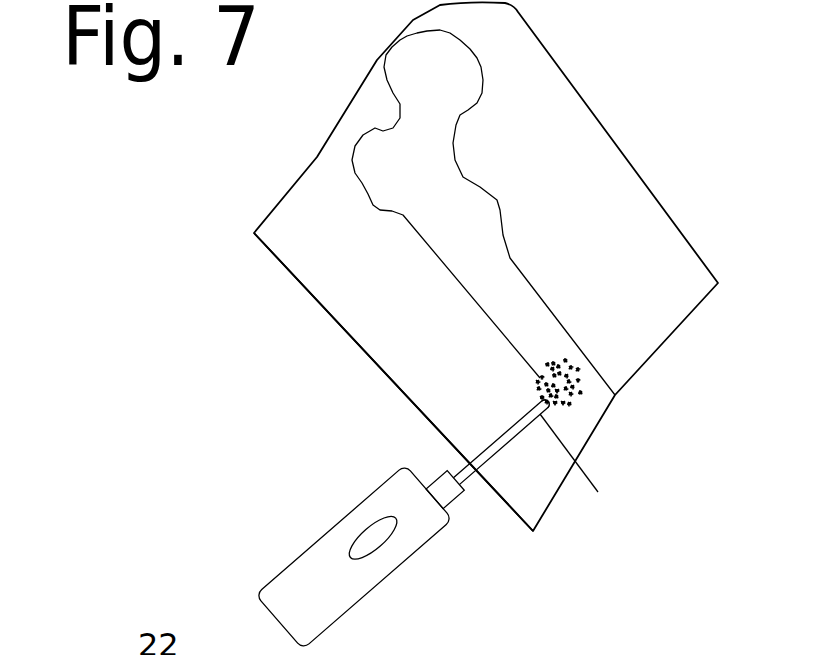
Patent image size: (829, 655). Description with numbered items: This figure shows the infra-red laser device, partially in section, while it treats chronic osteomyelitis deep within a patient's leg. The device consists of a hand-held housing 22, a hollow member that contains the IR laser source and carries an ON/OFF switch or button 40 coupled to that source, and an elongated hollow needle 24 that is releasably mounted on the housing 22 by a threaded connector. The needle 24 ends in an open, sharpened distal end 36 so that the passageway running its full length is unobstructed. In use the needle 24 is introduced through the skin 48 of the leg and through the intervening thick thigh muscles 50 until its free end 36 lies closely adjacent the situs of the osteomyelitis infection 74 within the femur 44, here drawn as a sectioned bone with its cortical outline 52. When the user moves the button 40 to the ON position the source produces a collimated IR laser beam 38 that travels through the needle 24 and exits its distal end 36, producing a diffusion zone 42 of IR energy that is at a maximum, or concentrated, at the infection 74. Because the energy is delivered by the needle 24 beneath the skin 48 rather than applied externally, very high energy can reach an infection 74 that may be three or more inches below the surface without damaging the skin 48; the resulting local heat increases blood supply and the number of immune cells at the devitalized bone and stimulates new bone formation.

The housing 22 is at (397, 498).
The needle 24 is at (502, 432).
The distal end of the needle 36 is at (584, 473).
The IR laser beam 38 is at (545, 399).
The ON/OFF switch or button 40 is at (368, 542).
The diffusion zone 42 is at (567, 405).
The femur 44 is at (543, 335).
The skin 48 is at (638, 178).
The thigh muscles 50 is at (388, 297).
The bone outline 52 is at (453, 90).
The osteomyelitis infection / infection situs 74 is at (572, 373).